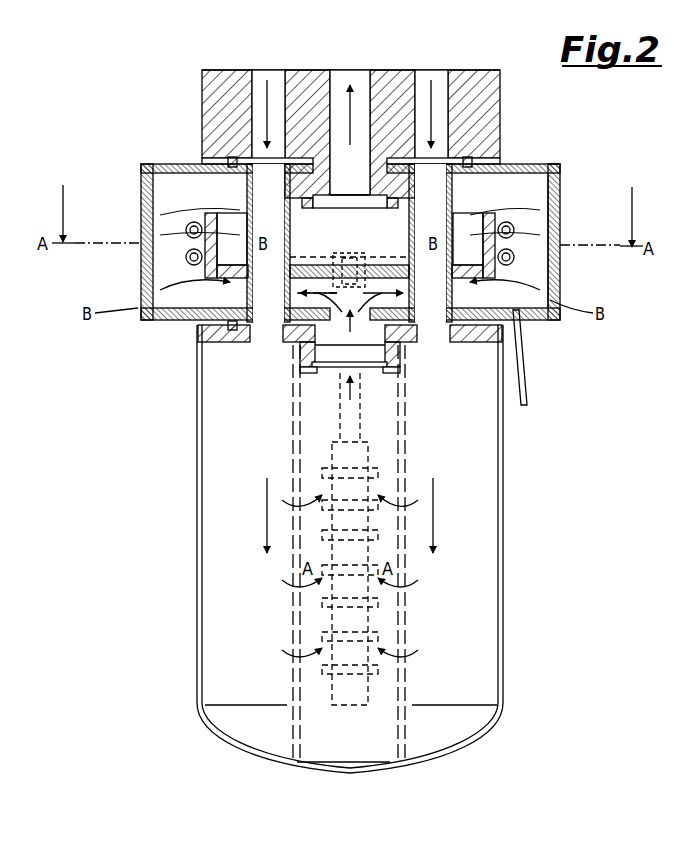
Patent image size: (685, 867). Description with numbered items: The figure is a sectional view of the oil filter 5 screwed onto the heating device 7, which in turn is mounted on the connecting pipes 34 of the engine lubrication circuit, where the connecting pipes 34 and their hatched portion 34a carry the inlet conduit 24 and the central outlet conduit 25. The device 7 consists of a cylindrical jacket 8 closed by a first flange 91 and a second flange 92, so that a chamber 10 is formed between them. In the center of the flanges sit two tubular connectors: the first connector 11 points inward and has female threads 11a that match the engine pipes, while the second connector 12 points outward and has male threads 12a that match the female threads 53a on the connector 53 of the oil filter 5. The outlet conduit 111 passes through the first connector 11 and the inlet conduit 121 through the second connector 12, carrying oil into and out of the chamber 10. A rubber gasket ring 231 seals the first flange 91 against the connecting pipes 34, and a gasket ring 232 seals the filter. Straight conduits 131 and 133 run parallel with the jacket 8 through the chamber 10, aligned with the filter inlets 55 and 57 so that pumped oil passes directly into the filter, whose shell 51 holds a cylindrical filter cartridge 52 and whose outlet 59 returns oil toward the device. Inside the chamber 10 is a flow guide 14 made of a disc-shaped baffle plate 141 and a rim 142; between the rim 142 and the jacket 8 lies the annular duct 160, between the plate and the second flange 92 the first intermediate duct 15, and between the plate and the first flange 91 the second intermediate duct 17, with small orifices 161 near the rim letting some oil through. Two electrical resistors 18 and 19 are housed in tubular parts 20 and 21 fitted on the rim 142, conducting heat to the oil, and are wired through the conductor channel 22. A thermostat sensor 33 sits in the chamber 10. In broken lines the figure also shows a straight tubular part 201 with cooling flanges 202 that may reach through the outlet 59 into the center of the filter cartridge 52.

The oil filter 5 is at (520, 550).
The device 7 is at (110, 162).
The cylindrical jacket 8 is at (548, 288).
The chamber 10 is at (330, 253).
The first tubular connector 11 is at (392, 160).
The female threads 11a is at (385, 215).
The second tubular connector 12 is at (308, 352).
The male threads 12a is at (392, 352).
The flow guide 14 is at (165, 288).
The first intermediate duct 15 is at (165, 312).
The second intermediate duct 17 is at (155, 165).
The electrical resistor 18 is at (175, 224).
The electrical resistor 19 is at (185, 257).
The tubular part 20 is at (178, 238).
The tubular part 21 is at (200, 262).
The conductor channel 22 is at (550, 330).
The inlet conduit 24 is at (267, 175).
The outlet conduit 25 is at (340, 82).
The sensor 33 is at (480, 248).
The connecting pipes 34 is at (220, 78).
The connection block section 34a is at (298, 83).
The shell 51 is at (497, 680).
The filter cartridge 52 is at (292, 732).
The connector 53 is at (312, 383).
The female threads 53a is at (322, 373).
The inlet 55 is at (263, 333).
The inlet 57 is at (425, 333).
The outlet 59 is at (350, 375).
The first flange 91 is at (548, 168).
The second flange 92 is at (180, 320).
The outlet conduit 111 is at (366, 183).
The inlet conduit 121 is at (347, 355).
The conduit 131 is at (240, 160).
The conduit 133 is at (500, 160).
The baffle plate 141 is at (253, 322).
The rim 142 is at (540, 195).
The annular duct 160 is at (185, 228).
The orifices 161 is at (340, 210).
The straight tubular part 201 is at (365, 548).
The cooling flanges 202 is at (322, 636).
The rubber gasket ring 231 is at (232, 162).
The gasket ring 232 is at (210, 372).